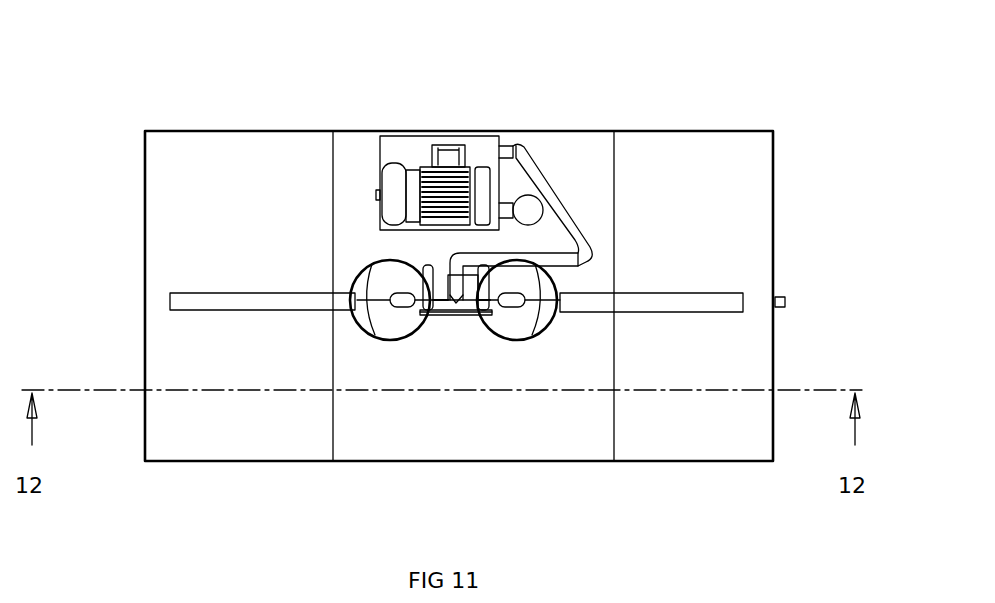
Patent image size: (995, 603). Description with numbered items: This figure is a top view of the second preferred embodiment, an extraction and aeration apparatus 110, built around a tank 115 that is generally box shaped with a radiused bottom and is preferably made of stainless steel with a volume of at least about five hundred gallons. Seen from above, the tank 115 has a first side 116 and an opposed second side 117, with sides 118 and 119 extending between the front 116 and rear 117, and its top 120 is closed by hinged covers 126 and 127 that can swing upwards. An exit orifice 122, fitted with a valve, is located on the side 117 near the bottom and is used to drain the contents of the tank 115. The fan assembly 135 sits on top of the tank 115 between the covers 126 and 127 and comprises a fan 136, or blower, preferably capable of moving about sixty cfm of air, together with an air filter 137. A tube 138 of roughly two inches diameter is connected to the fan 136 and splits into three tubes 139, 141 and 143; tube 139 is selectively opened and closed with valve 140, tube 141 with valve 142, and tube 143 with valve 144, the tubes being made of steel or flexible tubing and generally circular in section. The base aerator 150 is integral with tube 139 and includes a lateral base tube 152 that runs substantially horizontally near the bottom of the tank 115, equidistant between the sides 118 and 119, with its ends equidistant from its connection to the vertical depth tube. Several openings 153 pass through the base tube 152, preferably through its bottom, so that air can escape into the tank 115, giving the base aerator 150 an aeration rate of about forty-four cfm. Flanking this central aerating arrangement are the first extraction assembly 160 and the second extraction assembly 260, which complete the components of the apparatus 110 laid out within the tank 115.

The extraction and aeration apparatus 110 is at (741, 98).
The tank 115 is at (776, 205).
The first side 116 is at (146, 270).
The second side 117 is at (776, 248).
The side 118 is at (268, 462).
The side 119 is at (245, 130).
The top 120 is at (178, 150).
The exit orifice 122 is at (787, 302).
The cover 126 is at (292, 172).
The cover 127 is at (617, 140).
The fan assembly 135 is at (452, 135).
The fan 136 is at (420, 155).
The air filter 137 is at (517, 150).
The tube 138 is at (548, 153).
The tube 139 is at (410, 355).
The valve 140 is at (375, 345).
The tube 141 is at (375, 269).
The valve 142 is at (430, 253).
The tube 143 is at (505, 320).
The valve 144 is at (493, 343).
The base aerator 150 is at (435, 340).
The lateral base tube 152 is at (185, 312).
The openings 153 is at (218, 310).
The first extraction assembly 160 is at (357, 293).
The second extraction assembly 260 is at (560, 295).